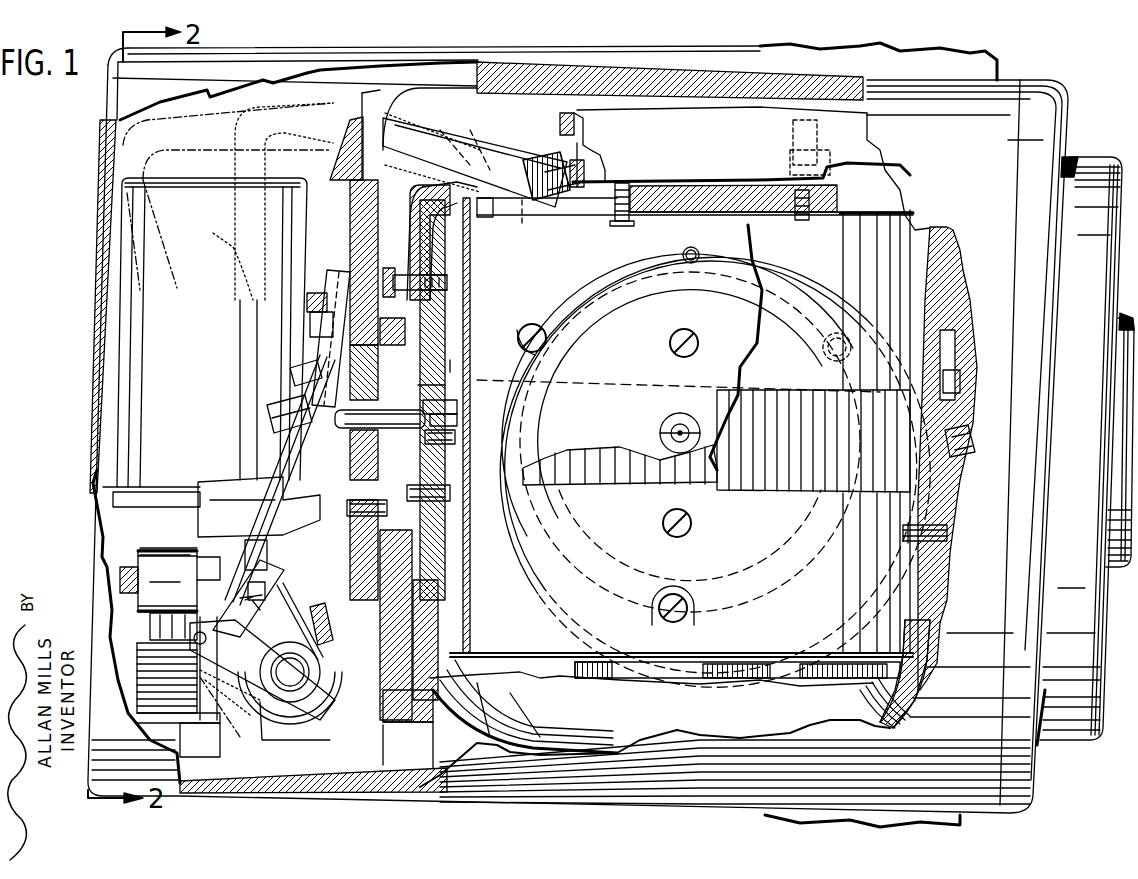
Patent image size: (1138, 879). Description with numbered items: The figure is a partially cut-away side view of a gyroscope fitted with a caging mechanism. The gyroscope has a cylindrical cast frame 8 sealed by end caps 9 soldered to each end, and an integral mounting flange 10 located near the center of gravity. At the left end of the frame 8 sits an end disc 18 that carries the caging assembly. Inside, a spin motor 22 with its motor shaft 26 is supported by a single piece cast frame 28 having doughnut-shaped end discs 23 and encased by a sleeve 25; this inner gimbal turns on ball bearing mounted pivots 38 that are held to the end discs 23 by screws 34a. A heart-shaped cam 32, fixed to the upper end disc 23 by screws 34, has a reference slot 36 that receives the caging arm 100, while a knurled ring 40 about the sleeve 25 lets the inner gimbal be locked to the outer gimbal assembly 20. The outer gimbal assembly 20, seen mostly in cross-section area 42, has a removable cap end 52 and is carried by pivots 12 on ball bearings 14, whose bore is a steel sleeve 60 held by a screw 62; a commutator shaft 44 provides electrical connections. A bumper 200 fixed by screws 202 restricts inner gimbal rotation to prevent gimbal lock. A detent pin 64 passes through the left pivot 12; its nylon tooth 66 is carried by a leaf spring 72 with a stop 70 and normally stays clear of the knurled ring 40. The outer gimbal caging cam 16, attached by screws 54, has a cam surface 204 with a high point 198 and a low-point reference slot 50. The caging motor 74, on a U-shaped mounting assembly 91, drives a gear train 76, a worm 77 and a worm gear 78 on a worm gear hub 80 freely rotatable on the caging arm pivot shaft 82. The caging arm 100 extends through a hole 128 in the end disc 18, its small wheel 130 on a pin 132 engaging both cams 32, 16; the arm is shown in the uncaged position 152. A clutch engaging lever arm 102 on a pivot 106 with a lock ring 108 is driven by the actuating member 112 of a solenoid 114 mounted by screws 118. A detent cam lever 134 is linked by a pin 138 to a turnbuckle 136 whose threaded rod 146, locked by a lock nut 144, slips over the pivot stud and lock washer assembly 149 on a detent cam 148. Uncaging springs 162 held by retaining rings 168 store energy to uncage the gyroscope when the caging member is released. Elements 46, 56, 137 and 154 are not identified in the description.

The cast frame 8 is at (582, 67).
The end caps 9 is at (266, 60).
The mounting flange 10 is at (705, 57).
The pivots 12 is at (413, 367).
The ball bearings 14 is at (413, 393).
The caging cam 16 is at (420, 193).
The end disc 18 is at (387, 200).
The outer gimbal assembly 20 is at (477, 713).
The spin motor 22 is at (733, 278).
The end discs 23 is at (487, 210).
The sleeve 25 is at (470, 290).
The motor shaft 26 is at (677, 422).
The single piece cast frame 28 is at (597, 232).
The heart-shaped cam 32 is at (887, 200).
The screws 34 is at (807, 220).
The screws 34a is at (623, 185).
The reference slot 36 is at (583, 157).
The pivots 38 is at (680, 187).
The knurled ring 40 is at (457, 467).
The cross-section area 42 is at (437, 260).
The commutator shaft 44 is at (967, 443).
The bolt 46 is at (940, 533).
The reference slot 50 is at (490, 123).
The end 52 is at (430, 653).
The screws 54 is at (390, 267).
The bolt 56 is at (447, 500).
The steel sleeve 60 is at (363, 533).
The screw 62 is at (343, 507).
The detent pin 64 is at (340, 423).
The nylon tooth 66 is at (463, 400).
The stop 70 is at (450, 433).
The leaf spring 72 is at (460, 407).
The caging motor 74 is at (204, 182).
The gear train 76 is at (123, 583).
The worm 77 is at (162, 708).
The worm gear 78 is at (263, 740).
The worm gear hub 80 is at (287, 737).
The caging arm pivot shaft 82 is at (222, 632).
The U-shaped mounting assembly 91 is at (207, 753).
The caging arm 100 is at (418, 107).
The clutch engaging lever arm 102 is at (263, 592).
The pivot 106 is at (133, 550).
The lock ring 108 is at (137, 557).
The actuating member 112 is at (257, 552).
The solenoid 114 is at (213, 483).
The screws 118 is at (310, 620).
The hole 128 is at (380, 50).
The small wheel 130 is at (525, 200).
The pin 132 is at (560, 214).
The detent cam lever 134 is at (230, 720).
The turnbuckle 136 is at (267, 453).
The clamp 137 is at (253, 597).
The pin 138 is at (285, 675).
The lock nut 144 is at (270, 410).
The threaded rod 146 is at (293, 390).
The detent cam 148 is at (330, 330).
The pivot stud and lock washer assembly 149 is at (307, 307).
The uncaged position 152 is at (160, 230).
The light path 154 is at (232, 247).
The uncaging springs 162 is at (307, 627).
The retaining rings 168 is at (293, 737).
The high point 198 is at (383, 720).
The bumper 200 is at (793, 157).
The screws 202 is at (803, 137).
The cam surface 204 is at (418, 143).